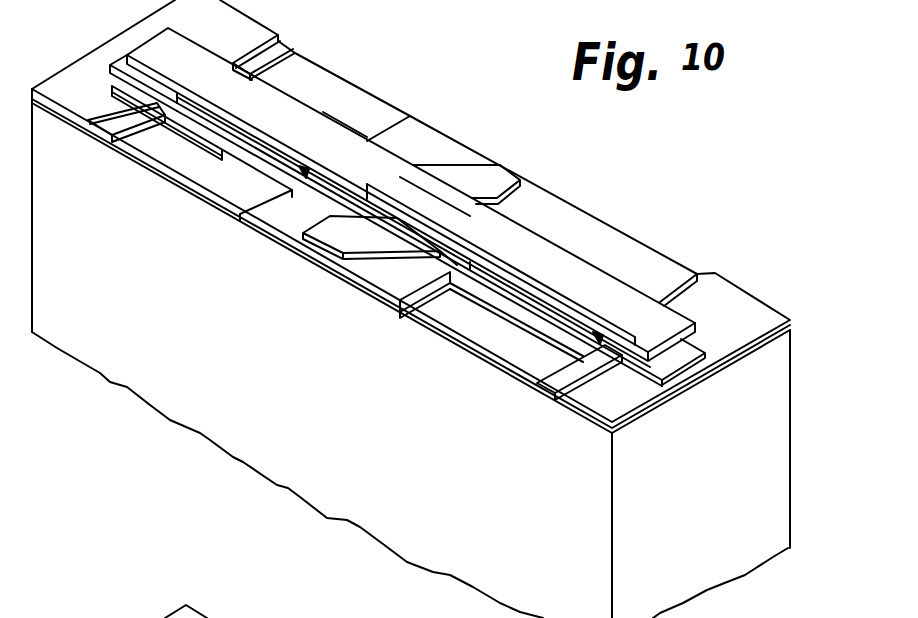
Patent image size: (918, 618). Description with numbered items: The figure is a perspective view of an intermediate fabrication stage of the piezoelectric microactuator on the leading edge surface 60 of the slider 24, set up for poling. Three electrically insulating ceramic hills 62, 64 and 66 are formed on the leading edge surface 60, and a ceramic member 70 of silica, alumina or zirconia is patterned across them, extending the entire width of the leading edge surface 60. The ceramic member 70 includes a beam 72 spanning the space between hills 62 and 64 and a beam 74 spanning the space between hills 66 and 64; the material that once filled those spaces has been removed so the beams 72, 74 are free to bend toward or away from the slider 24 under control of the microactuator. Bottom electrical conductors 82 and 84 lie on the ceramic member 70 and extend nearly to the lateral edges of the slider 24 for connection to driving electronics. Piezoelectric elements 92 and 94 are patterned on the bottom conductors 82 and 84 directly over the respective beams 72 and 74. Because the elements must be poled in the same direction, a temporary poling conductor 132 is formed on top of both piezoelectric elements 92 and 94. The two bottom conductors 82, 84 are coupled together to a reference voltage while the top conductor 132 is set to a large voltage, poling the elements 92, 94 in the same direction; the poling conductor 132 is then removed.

The slider 24 is at (763, 427).
The leading edge surface 60 is at (312, 77).
The hill 62 is at (123, 143).
The hill 64 is at (432, 318).
The hill 66 is at (536, 373).
The ceramic member 70 is at (515, 192).
The beam 72 is at (220, 148).
The beam 74 is at (500, 315).
The bottom electrical conductor 82 is at (90, 121).
The bottom electrical conductor 84 is at (597, 390).
The piezoelectric element 92 is at (305, 172).
The piezoelectric element 94 is at (585, 348).
The poling conductor 132 is at (403, 173).